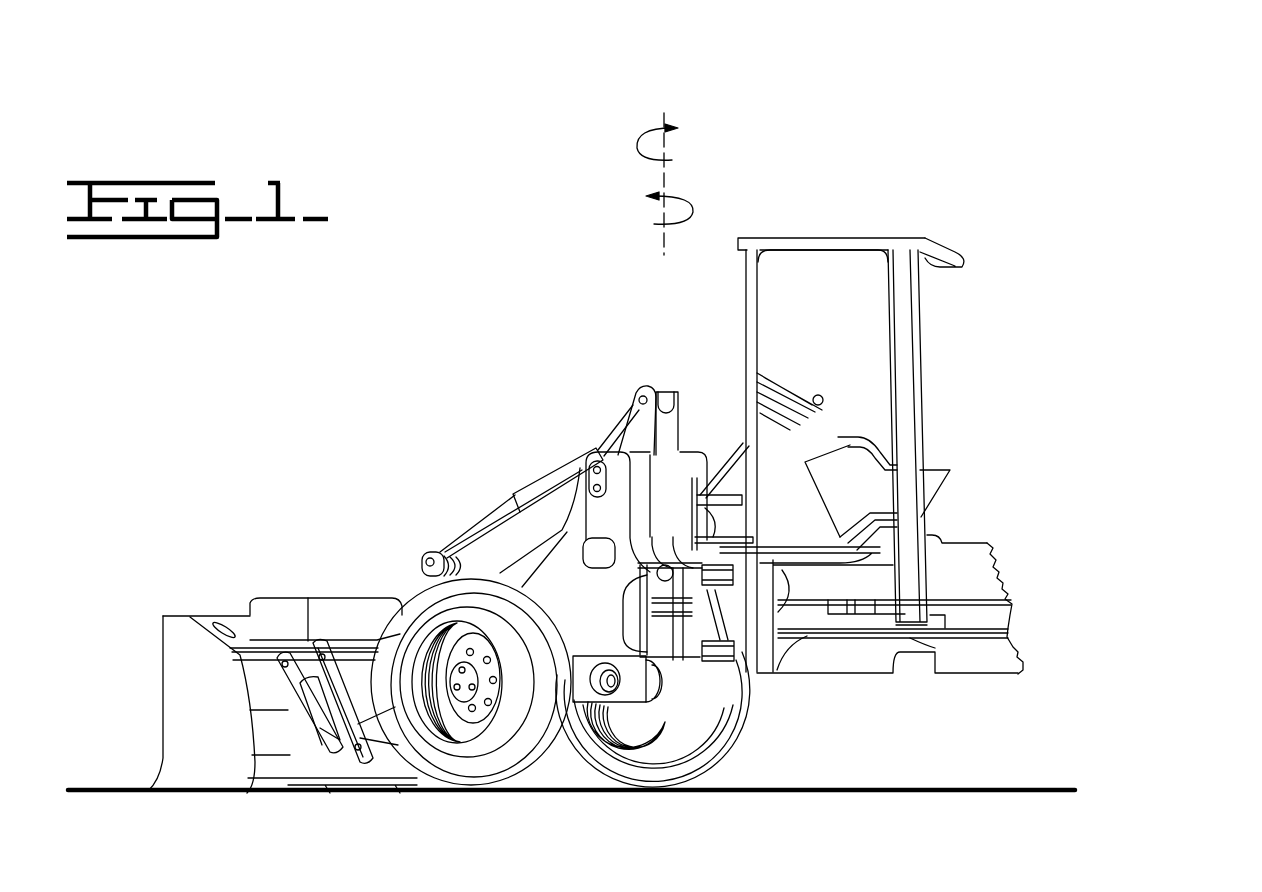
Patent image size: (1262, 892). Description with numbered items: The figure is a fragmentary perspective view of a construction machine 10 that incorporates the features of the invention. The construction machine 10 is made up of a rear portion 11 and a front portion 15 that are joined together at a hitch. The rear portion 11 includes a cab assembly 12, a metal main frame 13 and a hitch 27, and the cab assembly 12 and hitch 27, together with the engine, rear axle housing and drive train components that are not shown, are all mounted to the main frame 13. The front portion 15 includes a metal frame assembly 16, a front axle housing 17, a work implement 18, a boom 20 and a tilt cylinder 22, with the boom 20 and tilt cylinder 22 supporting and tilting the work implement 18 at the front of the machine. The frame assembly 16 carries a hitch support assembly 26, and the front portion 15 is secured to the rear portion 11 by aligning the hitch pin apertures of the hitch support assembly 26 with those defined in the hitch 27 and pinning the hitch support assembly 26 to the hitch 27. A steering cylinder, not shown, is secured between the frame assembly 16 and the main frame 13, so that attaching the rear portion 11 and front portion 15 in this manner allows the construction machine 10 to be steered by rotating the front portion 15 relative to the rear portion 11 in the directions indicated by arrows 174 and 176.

The construction machine 10 is at (922, 130).
The rear portion 11 is at (1082, 322).
The cab assembly 12 is at (1018, 424).
The main frame 13 is at (870, 683).
The front portion 15 is at (462, 462).
The frame assembly 16 is at (687, 380).
The front axle housing 17 is at (632, 690).
The work implement 18 is at (175, 630).
The boom 20 is at (527, 550).
The tilt cylinder 22 is at (548, 480).
The hitch support assembly 26 is at (686, 709).
The hitch 27 is at (730, 706).
The arrow 174 is at (638, 143).
The arrow 176 is at (693, 210).